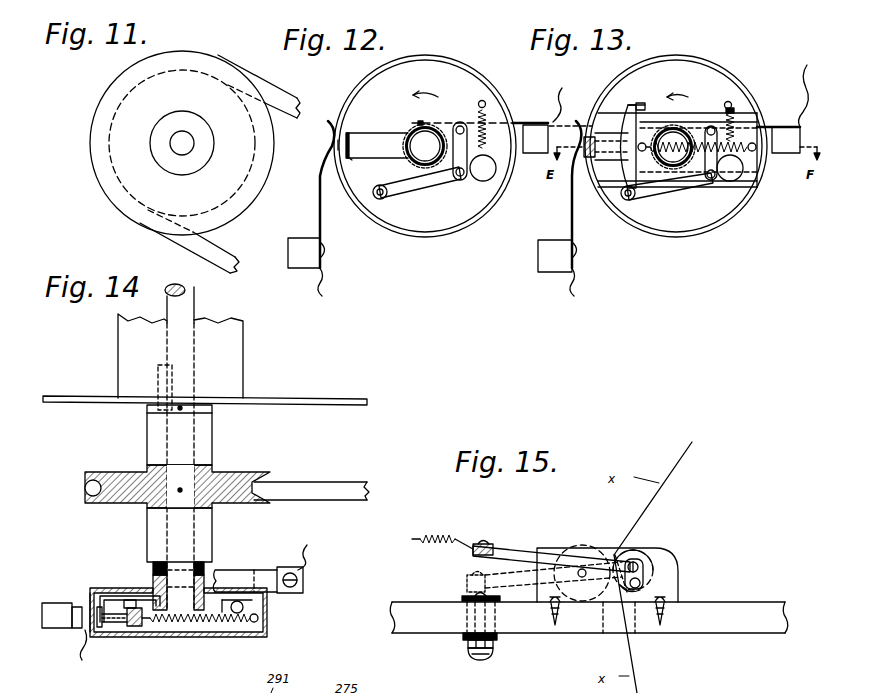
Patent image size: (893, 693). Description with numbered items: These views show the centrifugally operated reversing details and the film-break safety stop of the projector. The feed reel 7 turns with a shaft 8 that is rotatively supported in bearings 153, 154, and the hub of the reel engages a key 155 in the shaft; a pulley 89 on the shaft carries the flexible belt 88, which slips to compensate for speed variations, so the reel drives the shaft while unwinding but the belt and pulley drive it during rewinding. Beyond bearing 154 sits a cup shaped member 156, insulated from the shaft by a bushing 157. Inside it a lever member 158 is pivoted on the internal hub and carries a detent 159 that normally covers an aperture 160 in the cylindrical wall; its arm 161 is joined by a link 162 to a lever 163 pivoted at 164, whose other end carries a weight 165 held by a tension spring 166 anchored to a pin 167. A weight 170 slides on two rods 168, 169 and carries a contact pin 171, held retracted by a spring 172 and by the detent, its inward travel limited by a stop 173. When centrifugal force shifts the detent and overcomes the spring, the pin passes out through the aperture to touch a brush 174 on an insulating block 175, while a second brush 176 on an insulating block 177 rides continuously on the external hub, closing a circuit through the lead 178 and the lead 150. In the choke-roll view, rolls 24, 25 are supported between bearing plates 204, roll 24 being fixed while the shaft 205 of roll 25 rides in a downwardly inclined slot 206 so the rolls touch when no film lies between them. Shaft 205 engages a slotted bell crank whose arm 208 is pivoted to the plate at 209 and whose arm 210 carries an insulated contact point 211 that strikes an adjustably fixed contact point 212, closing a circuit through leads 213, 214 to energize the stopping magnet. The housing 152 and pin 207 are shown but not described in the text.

In FIG. 14, the feed reel 7 is at (282, 398).
In FIG. 11, the shaft 8 is at (176, 146).
In FIG. 12, the shaft 8 is at (423, 143).
In FIG. 13, the shaft 8 is at (673, 147).
In FIG. 14, the shaft 8 is at (185, 312).
In FIG. 15, the choke roll 24 is at (573, 547).
In FIG. 15, the choke roll 25 is at (639, 548).
In FIG. 11, the flexible belt 88 is at (277, 92).
In FIG. 14, the flexible belt 88 is at (320, 482).
In FIG. 11, the pulley 89 is at (211, 52).
In FIG. 12, the pulley 89 is at (418, 54).
In FIG. 13, the pulley 89 is at (672, 55).
In FIG. 14, the pulley 89 is at (243, 471).
In FIG. 12, the lead 150 is at (571, 105).
In FIG. 13, the lead 150 is at (808, 88).
In FIG. 14, the lead 150 is at (318, 557).
In FIG. 14, the housing 152 is at (200, 375).
In FIG. 14, the bearing 153 is at (147, 438).
In FIG. 14, the bearing 154 is at (147, 538).
In FIG. 14, the key 155 is at (158, 378).
In FIG. 12, the cup shaped member 156 is at (408, 232).
In FIG. 13, the cup shaped member 156 is at (725, 82).
In FIG. 14, the cup shaped member 156 is at (102, 589).
In FIG. 12, the bushing 157 is at (427, 137).
In FIG. 13, the bushing 157 is at (663, 127).
In FIG. 14, the bushing 157 is at (153, 578).
In FIG. 12, the lever member 158 is at (362, 133).
In FIG. 14, the lever member 158 is at (127, 598).
In FIG. 12, the detent 159 is at (351, 158).
In FIG. 14, the detent 159 is at (98, 612).
In FIG. 12, the aperture 160 is at (334, 143).
In FIG. 14, the aperture 160 is at (89, 640).
In FIG. 12, the arm 161 is at (452, 123).
In FIG. 12, the link 162 is at (463, 155).
In FIG. 13, the link 162 is at (722, 176).
In FIG. 12, the lever 163 is at (442, 184).
In FIG. 13, the lever 163 is at (670, 194).
In FIG. 12, the pivot 164 is at (387, 197).
In FIG. 13, the pivot 164 is at (628, 201).
In FIG. 12, the weight 165 is at (486, 171).
In FIG. 13, the weight 165 is at (742, 168).
In FIG. 14, the weight 165 is at (258, 618).
In FIG. 12, the tension spring 166 is at (487, 117).
In FIG. 13, the tension spring 166 is at (737, 117).
In FIG. 14, the tension spring 166 is at (245, 607).
In FIG. 12, the pin 167 is at (484, 101).
In FIG. 13, the pin 167 is at (732, 103).
In FIG. 13, the rod 168 is at (697, 112).
In FIG. 13, the rod 169 is at (647, 187).
In FIG. 13, the weight 170 is at (626, 107).
In FIG. 14, the weight 170 is at (140, 626).
In FIG. 13, the contact pin 171 is at (602, 163).
In FIG. 14, the contact pin 171 is at (110, 623).
In FIG. 13, the spring 172 is at (684, 158).
In FIG. 14, the spring 172 is at (210, 624).
In FIG. 13, the stop 173 is at (640, 103).
In FIG. 12, the brush 174 is at (318, 206).
In FIG. 13, the brush 174 is at (570, 218).
In FIG. 14, the brush 174 is at (70, 613).
In FIG. 12, the insulating block 175 is at (305, 261).
In FIG. 13, the insulating block 175 is at (544, 262).
In FIG. 14, the insulating block 175 is at (47, 632).
In FIG. 12, the brush 176 is at (517, 122).
In FIG. 13, the brush 176 is at (766, 124).
In FIG. 14, the brush 176 is at (240, 576).
In FIG. 12, the insulating block 177 is at (529, 150).
In FIG. 13, the insulating block 177 is at (775, 149).
In FIG. 14, the insulating block 177 is at (297, 597).
In FIG. 12, the lead 178 is at (328, 295).
In FIG. 13, the lead 178 is at (574, 295).
In FIG. 14, the lead 178 is at (78, 652).
In FIG. 15, the bearing plate 204 is at (680, 568).
In FIG. 15, the shaft 205 is at (642, 568).
In FIG. 15, the inclined slot 206 is at (620, 548).
In FIG. 15, the pin 207 is at (638, 563).
In FIG. 15, the arm 208 is at (641, 580).
In FIG. 15, the pivot 209 is at (636, 591).
In FIG. 15, the arm 210 is at (515, 546).
In FIG. 15, the insulated contact point 211 is at (478, 556).
In FIG. 15, the fixed contact point 212 is at (465, 597).
In FIG. 15, the lead 213 is at (463, 639).
In FIG. 15, the lead 214 is at (436, 536).